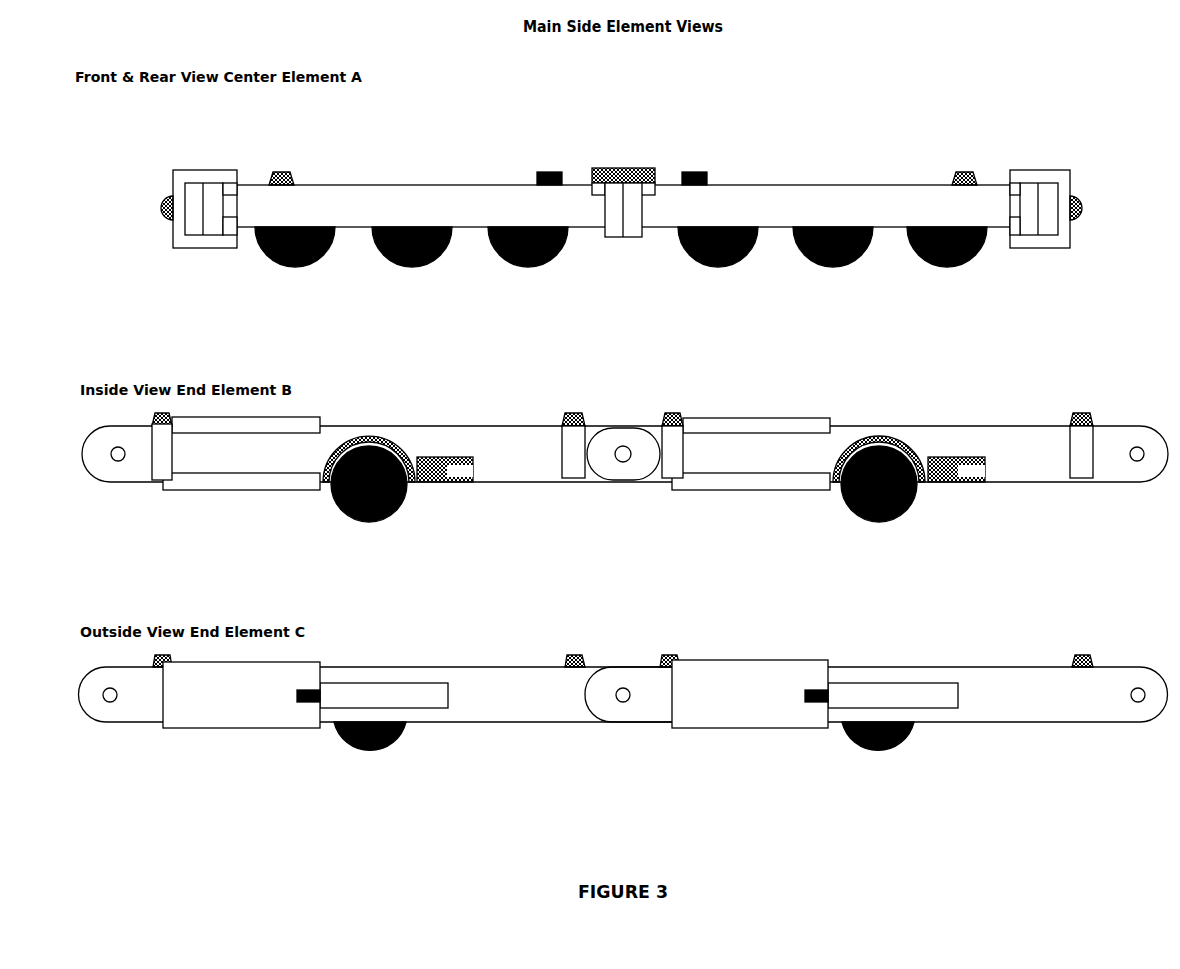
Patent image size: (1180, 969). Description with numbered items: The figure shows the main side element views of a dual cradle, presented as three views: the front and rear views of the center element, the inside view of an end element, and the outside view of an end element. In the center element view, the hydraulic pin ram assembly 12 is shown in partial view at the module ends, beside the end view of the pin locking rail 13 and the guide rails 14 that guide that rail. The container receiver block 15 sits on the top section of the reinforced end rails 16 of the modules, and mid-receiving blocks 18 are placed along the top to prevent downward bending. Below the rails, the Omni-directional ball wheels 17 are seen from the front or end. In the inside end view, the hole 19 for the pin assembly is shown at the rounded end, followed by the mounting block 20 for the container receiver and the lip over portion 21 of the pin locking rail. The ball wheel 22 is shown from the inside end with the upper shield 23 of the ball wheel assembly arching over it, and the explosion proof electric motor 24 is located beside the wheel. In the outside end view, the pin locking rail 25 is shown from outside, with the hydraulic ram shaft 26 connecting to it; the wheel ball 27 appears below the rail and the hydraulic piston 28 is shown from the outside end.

The hydraulic pin ram assembly 12 is at (163, 207).
The pin locking rail 13 is at (205, 248).
The guide rails for the pin locking rail 14 is at (240, 236).
The container receiver block 15 is at (283, 172).
The reinforced end rails of the modules 16 is at (370, 185).
The Omni-directional ball wheel 17 is at (330, 255).
The mid-receiving blocks 18 is at (548, 172).
The hole for the pin assembly 19 is at (120, 462).
The mounting block for the container receiver 20 is at (163, 455).
The lip over portion of the pin locking rail 21 is at (292, 430).
The ball wheel 22 is at (368, 522).
The upper shield of the ball wheel assembly 23 is at (410, 470).
The explosion proof electric motor 24 is at (457, 475).
The pin locking rail 25 is at (240, 698).
The hydraulic ram shaft 26 is at (308, 703).
The wheel ball 27 is at (372, 757).
The hydraulic piston 28 is at (422, 698).